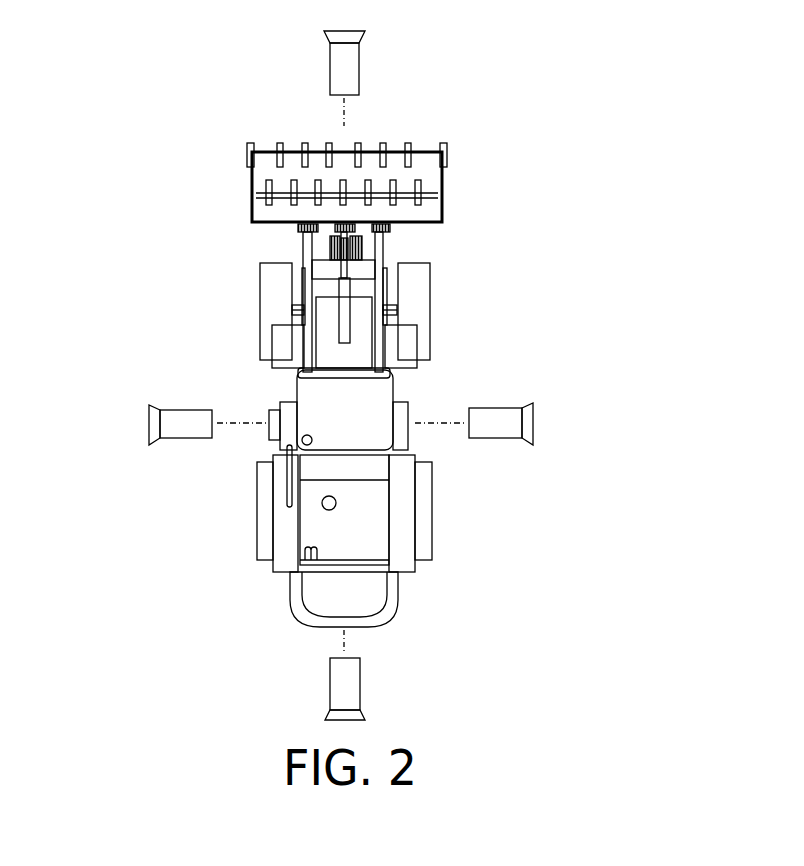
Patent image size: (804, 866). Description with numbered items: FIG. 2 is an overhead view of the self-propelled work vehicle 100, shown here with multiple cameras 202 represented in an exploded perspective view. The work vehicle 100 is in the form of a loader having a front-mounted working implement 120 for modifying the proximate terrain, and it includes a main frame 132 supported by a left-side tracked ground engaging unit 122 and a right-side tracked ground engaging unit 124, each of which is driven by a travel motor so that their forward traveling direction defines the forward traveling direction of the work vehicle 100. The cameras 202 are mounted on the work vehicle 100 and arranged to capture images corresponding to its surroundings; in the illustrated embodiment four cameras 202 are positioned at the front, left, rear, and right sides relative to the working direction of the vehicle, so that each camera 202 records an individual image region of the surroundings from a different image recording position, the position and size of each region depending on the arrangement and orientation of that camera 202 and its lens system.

The self-propelled work vehicle 100 is at (97, 275).
The working implement 120 is at (252, 210).
The left-side tracked ground engaging unit 122 is at (260, 335).
The right-side tracked ground engaging unit 124 is at (430, 307).
The main frame 132 is at (409, 413).
The camera 202 is at (330, 73).